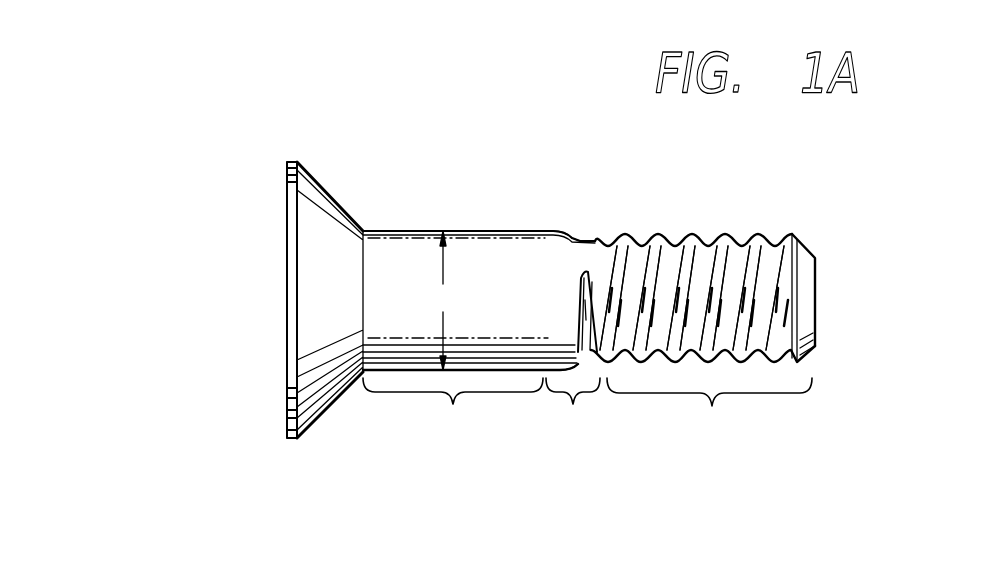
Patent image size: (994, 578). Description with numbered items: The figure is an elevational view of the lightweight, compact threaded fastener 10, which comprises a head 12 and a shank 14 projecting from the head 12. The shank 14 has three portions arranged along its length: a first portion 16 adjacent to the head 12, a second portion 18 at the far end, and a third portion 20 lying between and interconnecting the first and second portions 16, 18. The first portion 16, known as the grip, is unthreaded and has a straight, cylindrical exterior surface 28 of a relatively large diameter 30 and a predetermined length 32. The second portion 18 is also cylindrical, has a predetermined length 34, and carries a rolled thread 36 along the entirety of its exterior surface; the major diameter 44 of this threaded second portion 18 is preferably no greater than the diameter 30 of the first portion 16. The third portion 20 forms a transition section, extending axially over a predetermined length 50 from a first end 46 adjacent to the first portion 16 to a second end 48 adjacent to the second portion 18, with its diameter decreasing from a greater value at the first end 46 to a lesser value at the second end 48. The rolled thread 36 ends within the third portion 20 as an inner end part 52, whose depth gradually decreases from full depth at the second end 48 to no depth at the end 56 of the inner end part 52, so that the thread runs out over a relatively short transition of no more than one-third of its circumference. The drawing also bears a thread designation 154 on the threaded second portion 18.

The threaded fastener 10 is at (287, 302).
The head 12 is at (287, 232).
The shank 14 is at (457, 229).
The first portion 16 is at (389, 255).
The second portion 18 is at (707, 246).
The third portion 20 is at (563, 375).
The exterior surface 28 is at (488, 300).
The diameter 30 is at (445, 268).
The predetermined length 32 is at (450, 440).
The predetermined length 34 is at (708, 440).
The rolled thread 36 is at (776, 249).
The major diameter 44 is at (675, 367).
The first end 46 is at (560, 368).
The second end 48 is at (612, 368).
The predetermined length 50 is at (573, 440).
The inner end part 52 is at (588, 266).
The end 56 is at (574, 245).
The thread 154 is at (644, 245).